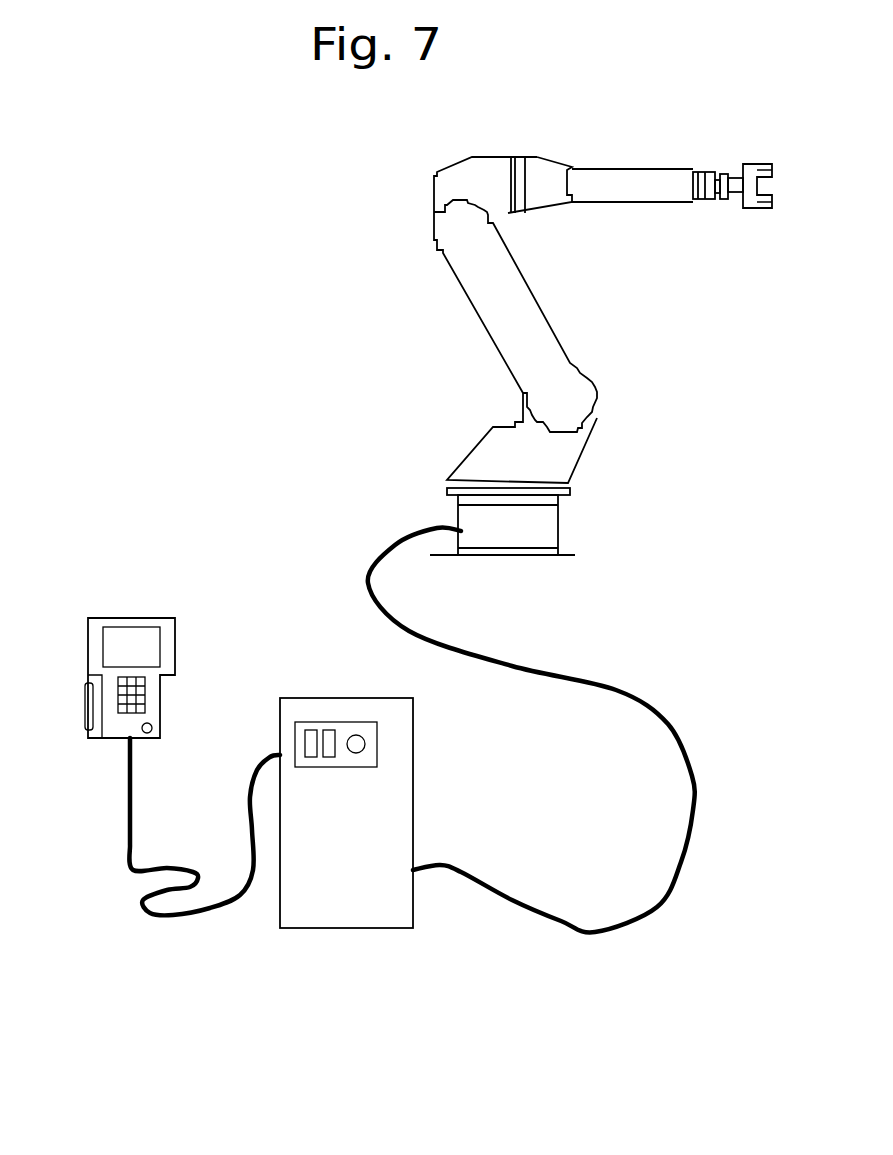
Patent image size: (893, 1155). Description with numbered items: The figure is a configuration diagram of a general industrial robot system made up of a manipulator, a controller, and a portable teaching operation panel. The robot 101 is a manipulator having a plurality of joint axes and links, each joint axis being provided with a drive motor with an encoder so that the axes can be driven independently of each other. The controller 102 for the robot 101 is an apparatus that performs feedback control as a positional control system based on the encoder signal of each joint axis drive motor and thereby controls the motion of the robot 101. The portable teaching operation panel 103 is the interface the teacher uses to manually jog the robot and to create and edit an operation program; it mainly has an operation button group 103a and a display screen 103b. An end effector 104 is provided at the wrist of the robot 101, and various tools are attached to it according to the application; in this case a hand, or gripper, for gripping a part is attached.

The robot 101 is at (490, 290).
The controller 102 is at (403, 767).
The portable teaching operation panel 103 is at (160, 627).
The operation button group 103a is at (145, 702).
The display screen 103b is at (145, 636).
The end effector 104 is at (745, 200).